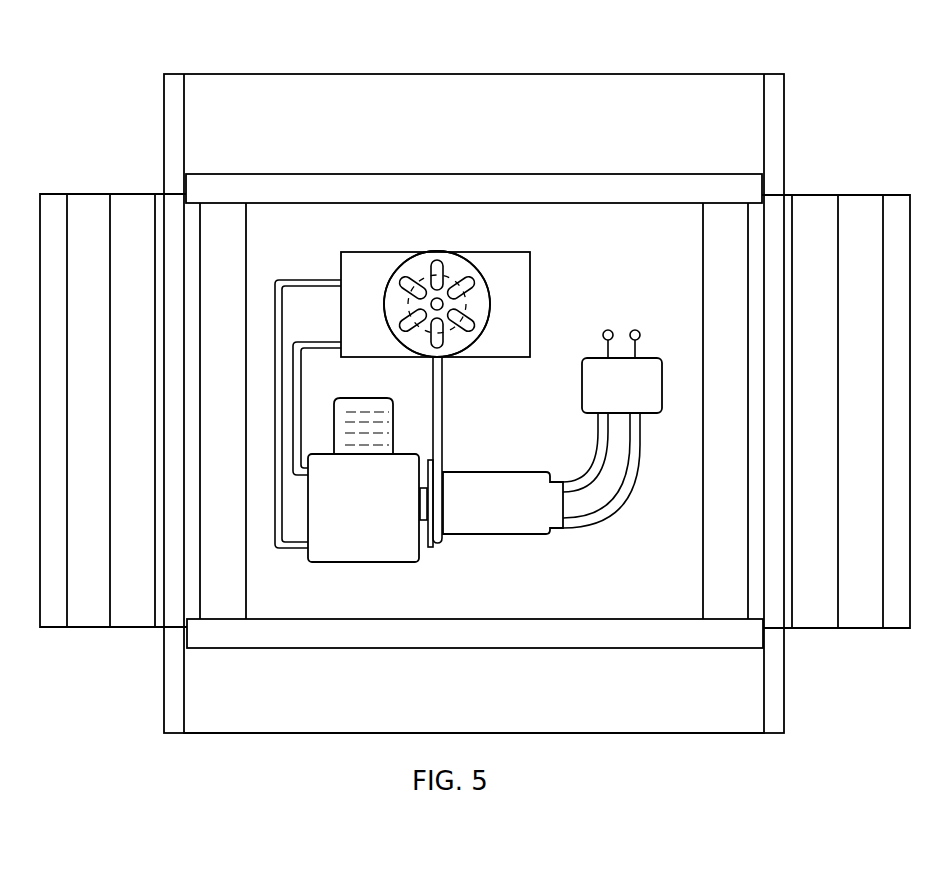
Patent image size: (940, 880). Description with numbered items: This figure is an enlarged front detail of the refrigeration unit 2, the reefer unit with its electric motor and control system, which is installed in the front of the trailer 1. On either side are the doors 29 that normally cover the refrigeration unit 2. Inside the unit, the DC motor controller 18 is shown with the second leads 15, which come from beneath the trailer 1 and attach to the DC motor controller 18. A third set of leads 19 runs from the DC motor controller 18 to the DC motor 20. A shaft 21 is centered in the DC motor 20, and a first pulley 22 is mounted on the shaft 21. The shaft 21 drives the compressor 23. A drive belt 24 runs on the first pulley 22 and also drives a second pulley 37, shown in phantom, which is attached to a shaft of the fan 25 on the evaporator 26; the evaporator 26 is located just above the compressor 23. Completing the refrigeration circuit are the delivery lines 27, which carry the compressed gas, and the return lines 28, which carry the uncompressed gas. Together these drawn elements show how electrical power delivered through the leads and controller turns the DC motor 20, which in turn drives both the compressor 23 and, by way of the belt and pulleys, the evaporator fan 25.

The trailer 1 is at (527, 66).
The refrigeration unit 2 is at (707, 126).
The doors 29 is at (97, 196).
The evaporator 26 is at (517, 268).
The fan 25 is at (447, 288).
The second pulley 37 is at (418, 283).
The drive belt 24 is at (443, 388).
The first pulley 22 is at (440, 483).
The shaft 21 is at (425, 512).
The compressor 23 is at (352, 517).
The return lines 28 is at (303, 280).
The delivery lines 27 is at (302, 387).
The DC motor 20 is at (508, 517).
The DC motor controller 18 is at (618, 383).
The second leads 15 is at (640, 347).
The third set of leads 19 is at (628, 462).